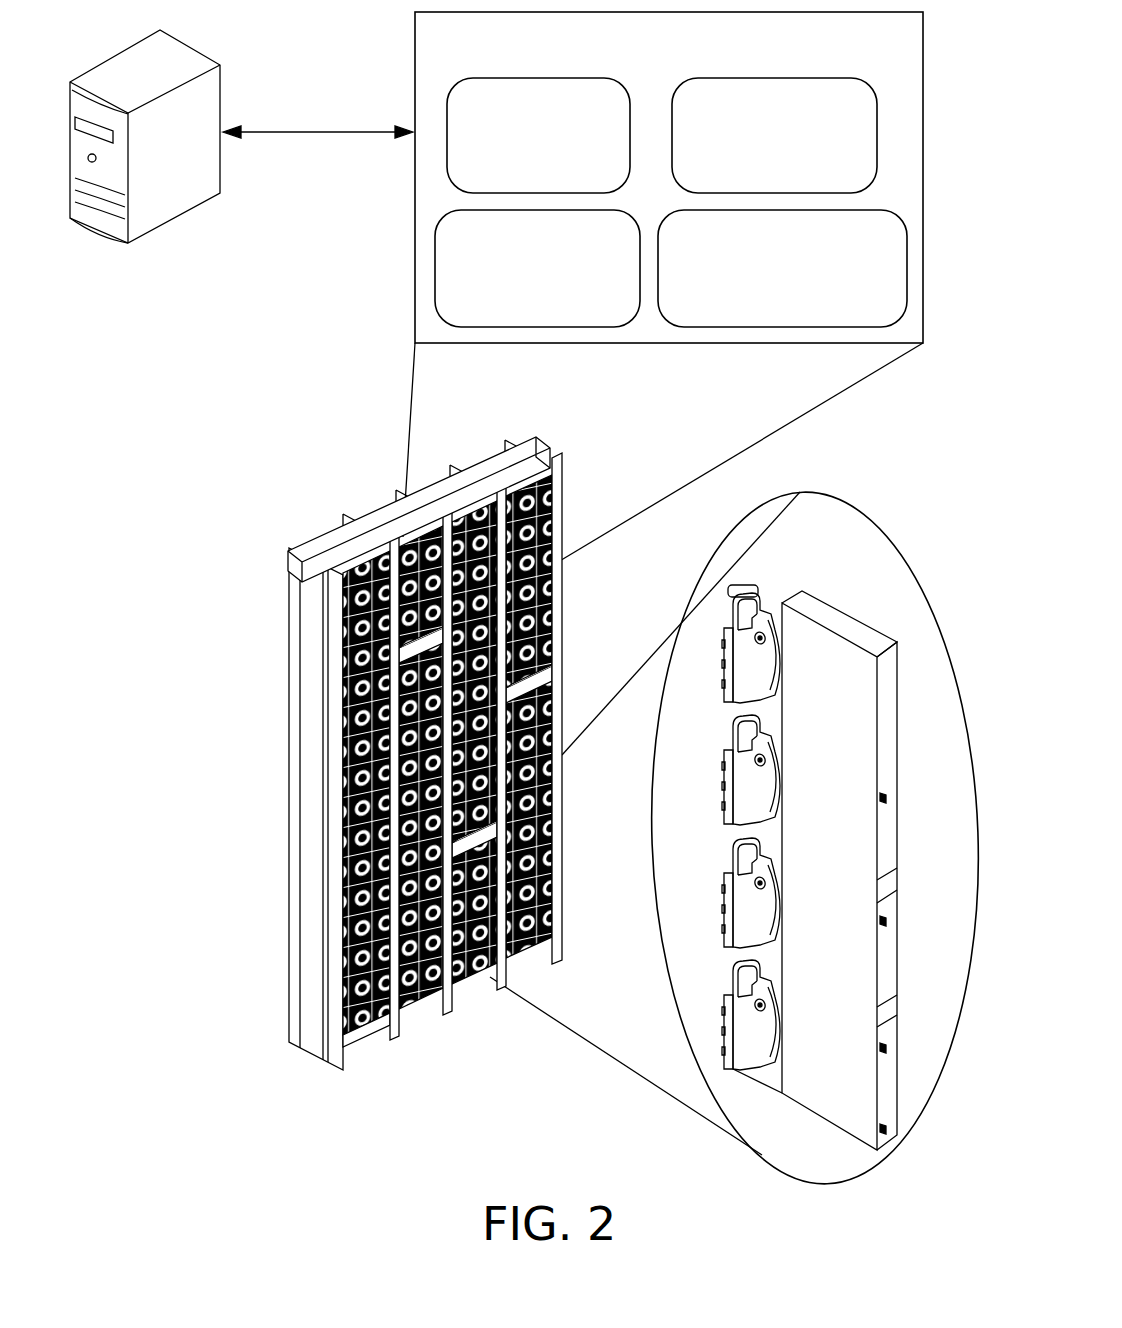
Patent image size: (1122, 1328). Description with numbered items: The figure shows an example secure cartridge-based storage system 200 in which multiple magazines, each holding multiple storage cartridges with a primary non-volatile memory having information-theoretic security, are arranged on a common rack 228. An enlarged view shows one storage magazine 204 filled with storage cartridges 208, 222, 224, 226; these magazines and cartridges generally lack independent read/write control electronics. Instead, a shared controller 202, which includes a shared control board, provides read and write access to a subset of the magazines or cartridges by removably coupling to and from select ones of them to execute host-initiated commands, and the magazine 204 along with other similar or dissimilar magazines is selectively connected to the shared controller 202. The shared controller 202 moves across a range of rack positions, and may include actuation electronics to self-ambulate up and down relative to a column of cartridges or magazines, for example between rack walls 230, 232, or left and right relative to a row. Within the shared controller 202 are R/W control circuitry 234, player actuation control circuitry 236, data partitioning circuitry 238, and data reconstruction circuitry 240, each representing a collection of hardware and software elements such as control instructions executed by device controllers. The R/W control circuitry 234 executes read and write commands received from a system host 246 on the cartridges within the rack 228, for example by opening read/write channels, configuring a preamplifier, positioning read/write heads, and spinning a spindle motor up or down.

The secure cartridge-based storage system 200 is at (228, 460).
The shared controller 202 is at (793, 48).
The storage magazine 204 is at (861, 588).
The storage cartridge 208 is at (713, 648).
The storage cartridge 222 is at (722, 795).
The storage cartridge 224 is at (722, 920).
The storage cartridge 226 is at (722, 1047).
The rack 228 is at (300, 745).
The rack wall 230 is at (552, 460).
The rack wall 232 is at (495, 485).
The R/W control circuitry 234 is at (518, 175).
The player actuation control circuitry 236 is at (755, 175).
The data partitioning circuitry 238 is at (518, 306).
The data reconstruction circuitry 240 is at (762, 306).
The system host 246 is at (153, 180).